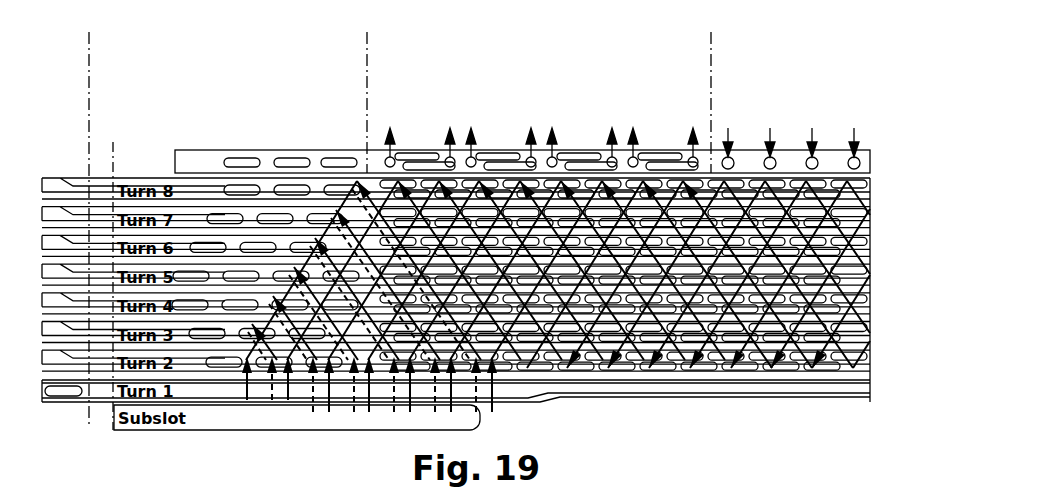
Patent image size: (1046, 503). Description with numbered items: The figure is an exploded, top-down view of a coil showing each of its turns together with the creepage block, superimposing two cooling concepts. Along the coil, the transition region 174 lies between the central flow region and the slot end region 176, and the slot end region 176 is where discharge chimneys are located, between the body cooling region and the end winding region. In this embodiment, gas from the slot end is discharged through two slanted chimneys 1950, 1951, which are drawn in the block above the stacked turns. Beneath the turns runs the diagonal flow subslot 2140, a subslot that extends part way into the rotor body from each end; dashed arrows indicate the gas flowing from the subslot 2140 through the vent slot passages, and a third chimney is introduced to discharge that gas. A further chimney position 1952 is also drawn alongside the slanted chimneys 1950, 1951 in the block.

The slot end region 176 is at (367, 48).
The transition region 174 is at (711, 48).
The slanted chimney 1950 is at (237, 156).
The slanted chimney 1951 is at (291, 156).
The third winding slot position 1952 is at (341, 156).
The diagonal flow subslot 2140 is at (290, 431).